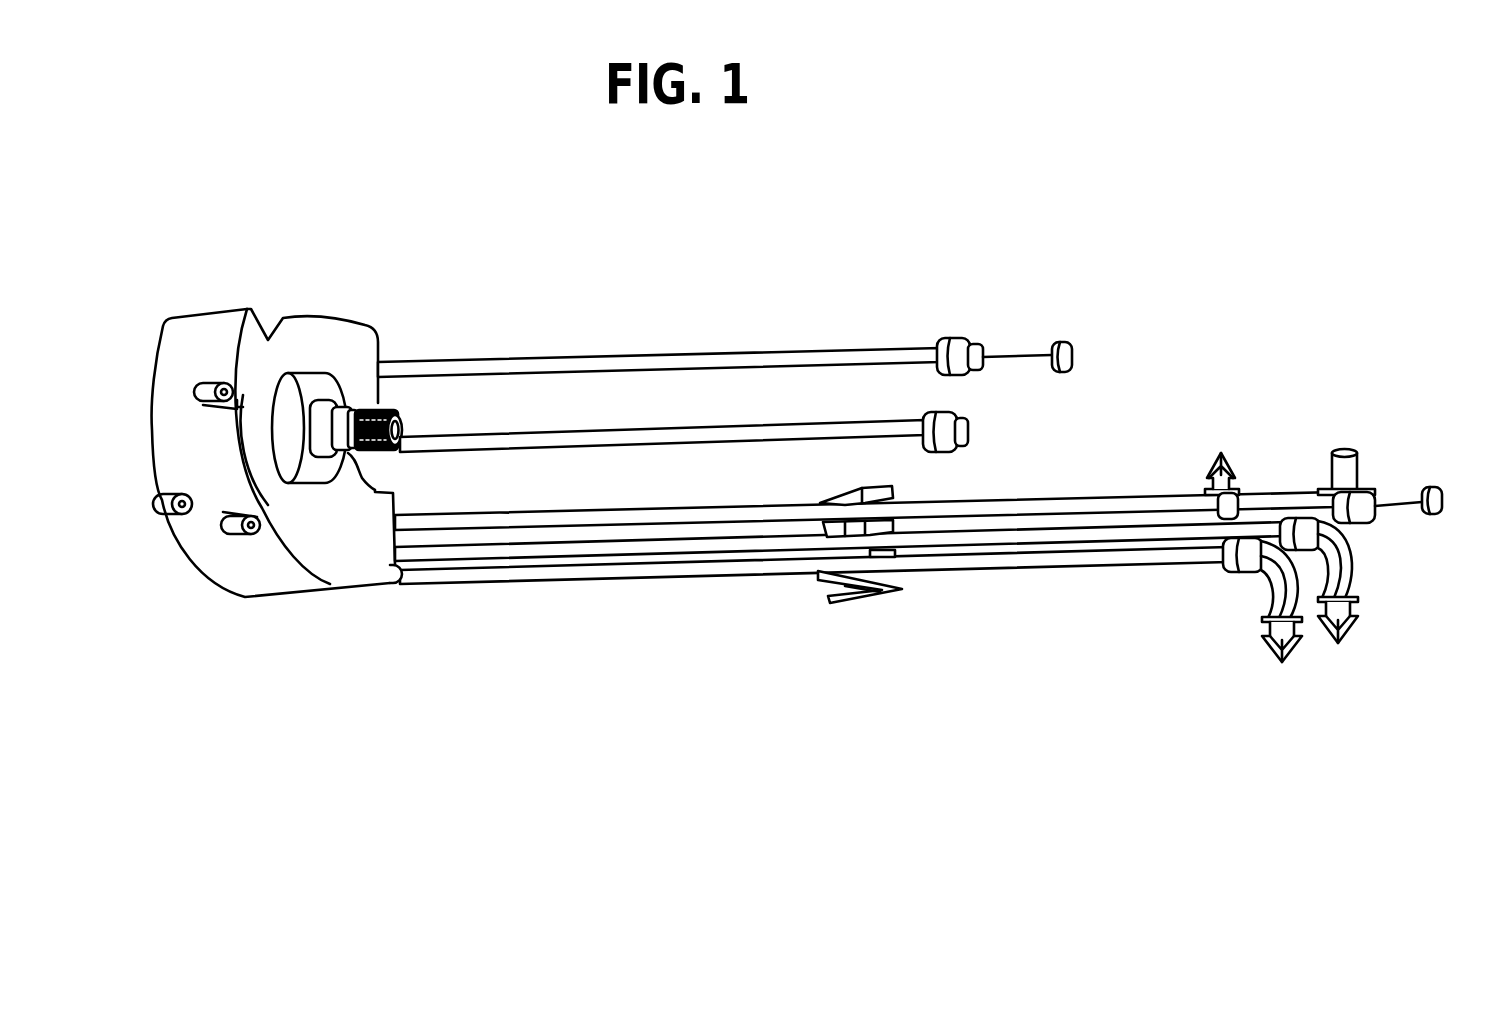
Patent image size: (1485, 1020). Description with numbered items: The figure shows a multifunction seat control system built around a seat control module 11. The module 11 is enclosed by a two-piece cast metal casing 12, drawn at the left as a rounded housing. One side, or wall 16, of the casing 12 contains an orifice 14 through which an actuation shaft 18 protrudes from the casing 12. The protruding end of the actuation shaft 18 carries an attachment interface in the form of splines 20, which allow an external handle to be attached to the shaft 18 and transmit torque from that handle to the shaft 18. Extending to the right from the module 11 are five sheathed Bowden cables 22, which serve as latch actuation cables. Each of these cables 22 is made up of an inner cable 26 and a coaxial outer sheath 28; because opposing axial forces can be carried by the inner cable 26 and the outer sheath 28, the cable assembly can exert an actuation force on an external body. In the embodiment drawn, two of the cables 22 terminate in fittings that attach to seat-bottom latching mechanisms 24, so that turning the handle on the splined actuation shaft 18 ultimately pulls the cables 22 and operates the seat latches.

The seat control module 11 is at (143, 313).
The two-piece cast metal casing 12 is at (304, 346).
The orifice 14 is at (352, 403).
The wall 16 is at (357, 553).
The actuation shaft 18 is at (398, 410).
The splines 20 is at (353, 457).
The sheathed Bowden cables 22 is at (658, 332).
The seat-bottom latching mechanisms 24 is at (1330, 645).
The inner cable 26 is at (1018, 360).
The outer sheath 28 is at (825, 360).